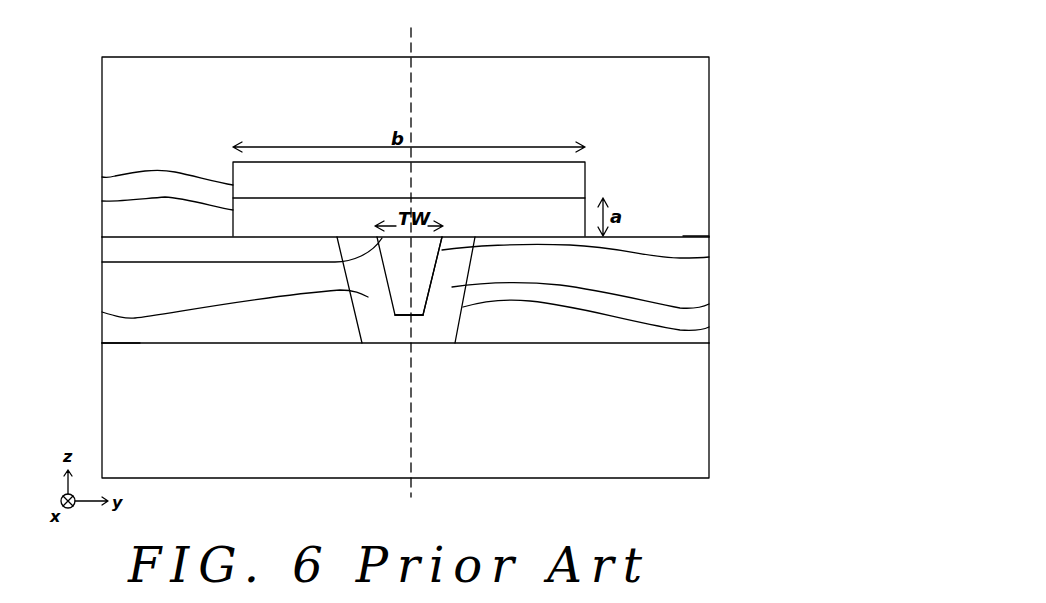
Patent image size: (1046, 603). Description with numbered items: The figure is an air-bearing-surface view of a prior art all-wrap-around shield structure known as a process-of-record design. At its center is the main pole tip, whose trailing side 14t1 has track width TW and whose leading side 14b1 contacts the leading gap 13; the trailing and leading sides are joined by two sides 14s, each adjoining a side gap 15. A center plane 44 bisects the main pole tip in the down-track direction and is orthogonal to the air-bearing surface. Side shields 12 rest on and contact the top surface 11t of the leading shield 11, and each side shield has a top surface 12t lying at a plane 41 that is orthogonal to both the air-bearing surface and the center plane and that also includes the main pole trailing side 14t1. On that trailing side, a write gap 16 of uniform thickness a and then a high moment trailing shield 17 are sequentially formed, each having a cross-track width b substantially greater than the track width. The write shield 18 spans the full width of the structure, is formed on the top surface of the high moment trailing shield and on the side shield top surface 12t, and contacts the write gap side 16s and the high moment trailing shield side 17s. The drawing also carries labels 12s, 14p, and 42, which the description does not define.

The leading shield 11 is at (698, 452).
The top surface of leading shield 11t is at (127, 343).
The side shields 12 is at (120, 284).
The top surface of side shield 12t is at (683, 236).
The lower surface of insulating layer 12s is at (709, 327).
The leading gap 13 is at (397, 333).
The leading side 14b1 is at (404, 315).
The groove side wall 14p is at (418, 302).
The sides 14s is at (709, 257).
The trailing side 14t1 is at (102, 262).
The side gap 15 is at (745, 298).
The write gap 16 is at (250, 230).
The write gap side 16s is at (102, 201).
The high moment trailing shield 17 is at (570, 182).
The high moment trailing shield side 17s is at (102, 177).
The write shield 18 is at (683, 120).
The plane 41 is at (732, 237).
The second reference plane 42 is at (102, 343).
The center plane 44 is at (412, 263).